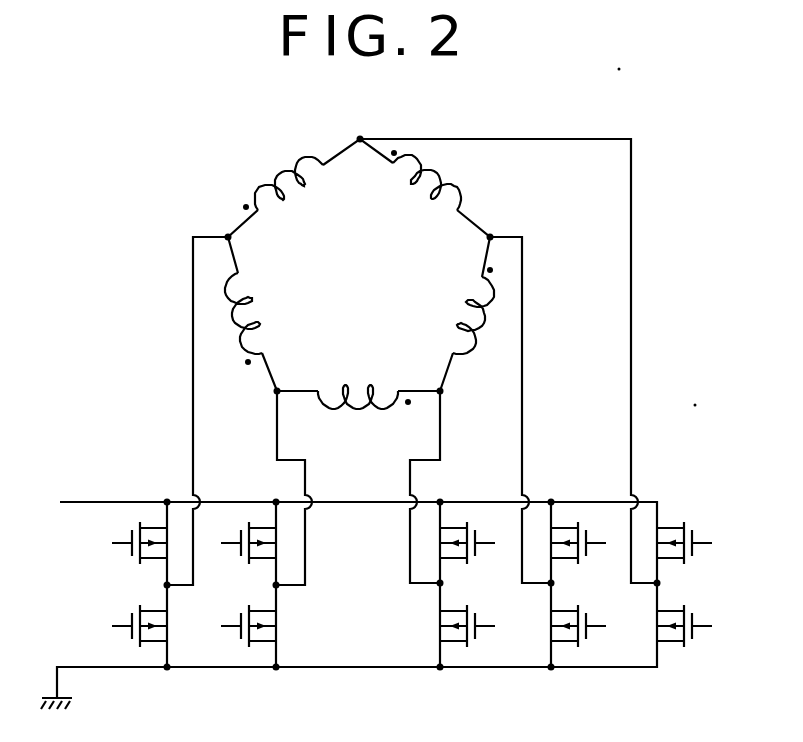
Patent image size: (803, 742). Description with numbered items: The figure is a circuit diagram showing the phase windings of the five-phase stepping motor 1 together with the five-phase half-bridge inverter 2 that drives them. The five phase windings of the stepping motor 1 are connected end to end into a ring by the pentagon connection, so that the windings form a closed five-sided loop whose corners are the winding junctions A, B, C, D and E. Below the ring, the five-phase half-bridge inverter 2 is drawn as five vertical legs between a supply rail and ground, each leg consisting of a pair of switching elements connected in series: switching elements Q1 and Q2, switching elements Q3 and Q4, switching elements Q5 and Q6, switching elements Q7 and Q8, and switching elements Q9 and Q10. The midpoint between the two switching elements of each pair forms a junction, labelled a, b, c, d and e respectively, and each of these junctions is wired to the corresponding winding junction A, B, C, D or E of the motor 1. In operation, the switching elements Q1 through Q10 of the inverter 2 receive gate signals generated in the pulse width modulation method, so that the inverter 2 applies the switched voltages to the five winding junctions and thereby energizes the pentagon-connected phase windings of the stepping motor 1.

The five-phase stepping motor 1 is at (217, 163).
The five-phase half-bridge inverter 2 is at (352, 670).
The switching element Q1 is at (693, 551).
The switching element Q2 is at (693, 636).
The switching element Q3 is at (585, 551).
The switching element Q4 is at (585, 636).
The switching element Q5 is at (475, 551).
The switching element Q6 is at (475, 636).
The switching element Q7 is at (239, 552).
The switching element Q8 is at (241, 636).
The switching element Q9 is at (123, 552).
The switching element Q10 is at (122, 636).